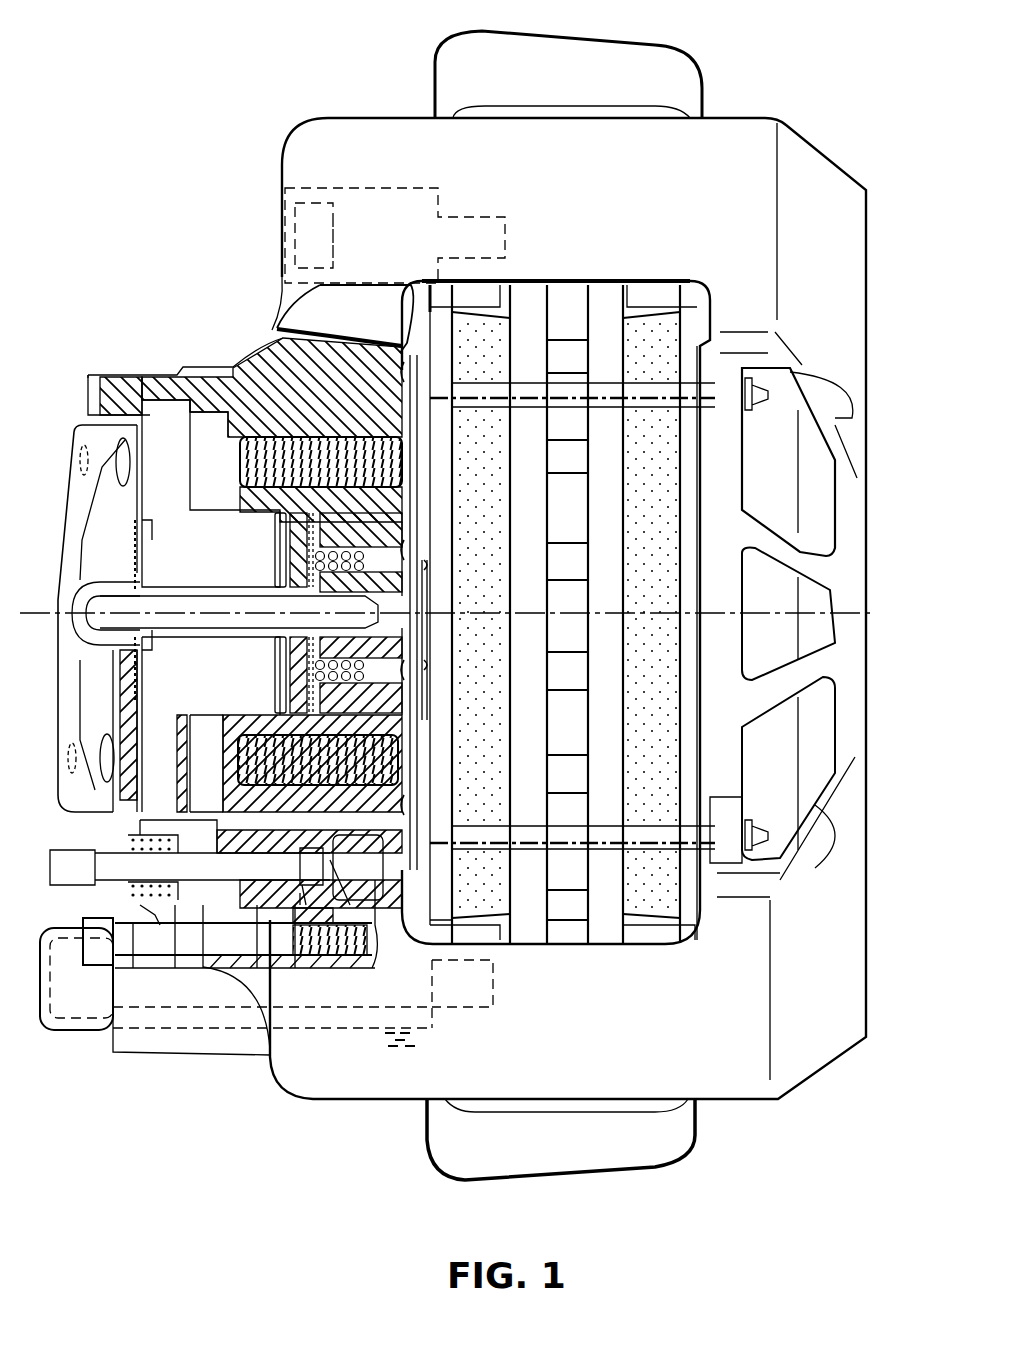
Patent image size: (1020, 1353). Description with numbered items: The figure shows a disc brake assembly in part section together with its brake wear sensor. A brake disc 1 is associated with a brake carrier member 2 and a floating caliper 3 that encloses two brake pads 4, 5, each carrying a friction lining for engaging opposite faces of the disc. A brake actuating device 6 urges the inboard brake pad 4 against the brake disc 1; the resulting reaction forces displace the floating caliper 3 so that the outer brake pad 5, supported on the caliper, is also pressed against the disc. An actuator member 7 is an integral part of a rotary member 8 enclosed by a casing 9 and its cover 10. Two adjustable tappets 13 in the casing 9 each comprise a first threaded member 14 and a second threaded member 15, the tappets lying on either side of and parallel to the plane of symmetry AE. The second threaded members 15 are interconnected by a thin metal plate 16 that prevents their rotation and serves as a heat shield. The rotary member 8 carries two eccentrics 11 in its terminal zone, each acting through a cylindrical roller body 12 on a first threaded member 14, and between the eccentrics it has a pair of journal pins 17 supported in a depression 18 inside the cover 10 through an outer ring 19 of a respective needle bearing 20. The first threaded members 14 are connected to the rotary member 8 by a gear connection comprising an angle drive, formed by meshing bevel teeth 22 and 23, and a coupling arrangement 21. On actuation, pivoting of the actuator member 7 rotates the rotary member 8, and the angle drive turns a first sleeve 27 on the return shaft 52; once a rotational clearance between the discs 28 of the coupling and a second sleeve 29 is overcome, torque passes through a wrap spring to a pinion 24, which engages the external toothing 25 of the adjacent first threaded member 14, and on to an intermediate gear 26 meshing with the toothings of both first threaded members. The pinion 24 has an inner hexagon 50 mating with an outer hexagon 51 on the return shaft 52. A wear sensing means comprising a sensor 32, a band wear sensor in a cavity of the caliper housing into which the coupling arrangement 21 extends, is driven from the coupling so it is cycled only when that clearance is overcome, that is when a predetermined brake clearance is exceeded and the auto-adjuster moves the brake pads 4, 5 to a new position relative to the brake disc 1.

The brake disc 1 is at (612, 452).
The brake carrier member 2 is at (625, 60).
The floating caliper 3 is at (745, 138).
The inboard brake pad 4 is at (484, 286).
The outer brake pad 5 is at (656, 286).
The brake actuating device 6 is at (210, 326).
The actuator member 7 is at (185, 600).
The rotary member 8 is at (150, 633).
The casing 9 is at (276, 327).
The cover 10 is at (125, 390).
The eccentrics 11 is at (180, 420).
The cylindrical roller body 12 is at (222, 420).
The adjustable tappets 13 is at (444, 435).
The first threaded member 14 is at (360, 440).
The second threaded member 15 is at (392, 456).
The thin metal plate 16 is at (404, 654).
The journal pins 17 is at (242, 562).
The depression 18 is at (206, 763).
The outer ring 19 is at (140, 530).
The needle bearing 20 is at (150, 520).
The coupling arrangement 21 is at (125, 895).
The bevel teeth 22 is at (140, 823).
The bevel teeth 23 is at (145, 913).
The pinion 24 is at (293, 905).
The external toothing 25 is at (392, 520).
The intermediate gear 26 is at (385, 565).
The first sleeve 27 is at (178, 910).
The discs 28 is at (205, 960).
The second sleeve 29 is at (253, 900).
The sensor 32 is at (372, 873).
The inner hexagon 50 is at (315, 882).
The outer hexagon 51 is at (332, 880).
The return shaft 52 is at (120, 858).
The plane of symmetry AE is at (610, 622).